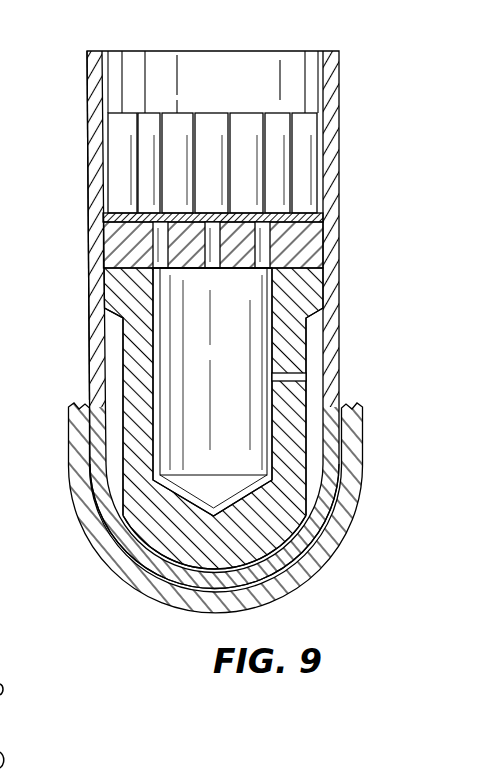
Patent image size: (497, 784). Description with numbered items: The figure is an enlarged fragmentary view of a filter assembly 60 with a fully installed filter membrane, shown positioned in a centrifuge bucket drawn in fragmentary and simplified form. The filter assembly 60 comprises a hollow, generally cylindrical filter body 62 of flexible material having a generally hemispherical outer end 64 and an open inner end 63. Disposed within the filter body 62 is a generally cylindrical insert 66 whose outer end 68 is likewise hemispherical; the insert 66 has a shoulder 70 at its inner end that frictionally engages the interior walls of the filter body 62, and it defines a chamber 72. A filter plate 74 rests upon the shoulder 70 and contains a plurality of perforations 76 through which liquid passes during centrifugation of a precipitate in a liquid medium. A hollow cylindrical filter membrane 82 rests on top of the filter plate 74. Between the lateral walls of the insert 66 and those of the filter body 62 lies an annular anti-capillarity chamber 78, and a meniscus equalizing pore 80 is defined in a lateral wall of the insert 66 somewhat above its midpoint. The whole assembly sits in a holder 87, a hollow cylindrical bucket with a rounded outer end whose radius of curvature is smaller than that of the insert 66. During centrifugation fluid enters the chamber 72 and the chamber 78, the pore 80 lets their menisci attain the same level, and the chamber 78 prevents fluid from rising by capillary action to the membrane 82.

The filter assembly 60 is at (62, 178).
The filter body 62 is at (330, 70).
The open inner end 63 is at (87, 60).
The outer end 64 is at (163, 578).
The insert 66 is at (138, 355).
The outer end 68 is at (185, 567).
The shoulder 70 is at (113, 292).
The chamber 72 is at (242, 332).
The filter plate 74 is at (107, 233).
The perforations 76 is at (207, 238).
The anti-capillarity chamber 78 is at (313, 357).
The meniscus equalizing pore 80 is at (297, 378).
The filter membrane 82 is at (170, 127).
The holder 87 is at (327, 560).